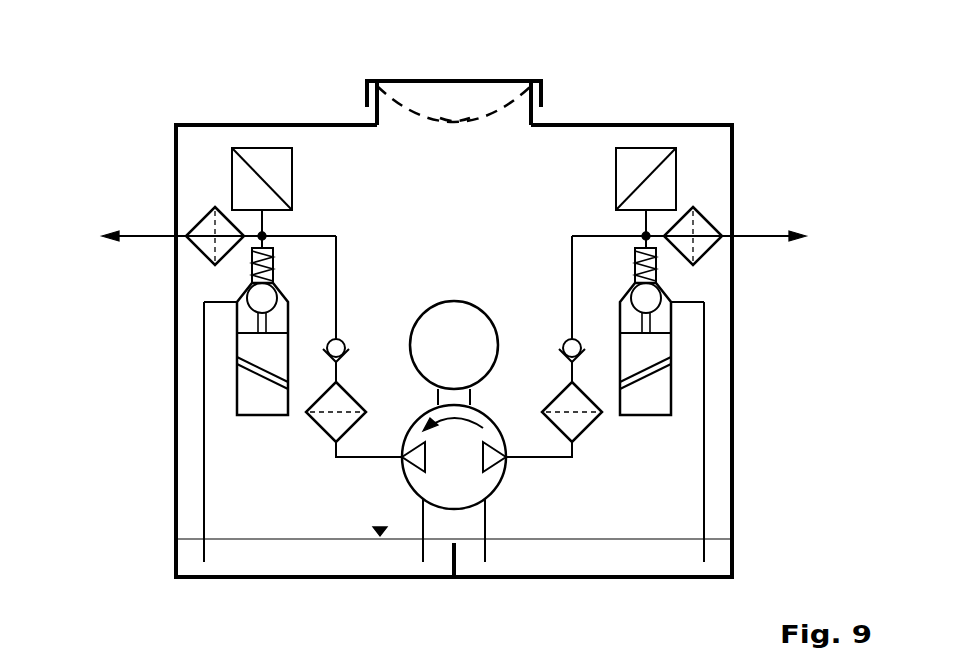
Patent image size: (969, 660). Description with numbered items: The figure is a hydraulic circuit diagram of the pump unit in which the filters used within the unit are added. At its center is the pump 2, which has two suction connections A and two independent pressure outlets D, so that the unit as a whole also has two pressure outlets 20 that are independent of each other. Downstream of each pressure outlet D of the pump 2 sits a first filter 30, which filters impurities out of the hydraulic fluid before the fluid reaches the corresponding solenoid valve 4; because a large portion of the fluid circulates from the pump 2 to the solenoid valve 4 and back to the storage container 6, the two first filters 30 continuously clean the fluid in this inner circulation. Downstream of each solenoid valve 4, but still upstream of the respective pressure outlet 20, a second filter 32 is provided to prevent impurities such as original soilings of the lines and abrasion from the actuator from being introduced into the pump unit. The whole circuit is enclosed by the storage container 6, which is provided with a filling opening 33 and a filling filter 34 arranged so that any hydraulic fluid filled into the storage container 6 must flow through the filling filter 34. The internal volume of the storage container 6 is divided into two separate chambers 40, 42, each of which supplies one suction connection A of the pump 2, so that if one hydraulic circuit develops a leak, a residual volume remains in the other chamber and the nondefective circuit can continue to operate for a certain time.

The pump 2 is at (500, 483).
The solenoid valve 4 is at (237, 388).
The storage container 6 is at (718, 557).
The pressure outlet 20 is at (130, 233).
The first filter 30 is at (316, 432).
The second filter 32 is at (197, 251).
The filling opening 33 is at (418, 93).
The filling filter 34 is at (472, 120).
The chamber 40 is at (592, 560).
The chamber 42 is at (312, 560).
The intake region A is at (422, 502).
The pressure region D is at (400, 455).